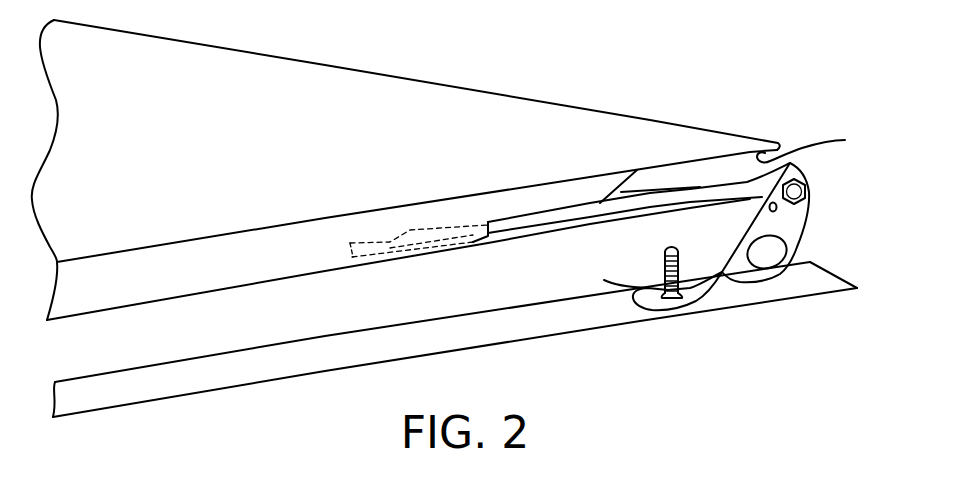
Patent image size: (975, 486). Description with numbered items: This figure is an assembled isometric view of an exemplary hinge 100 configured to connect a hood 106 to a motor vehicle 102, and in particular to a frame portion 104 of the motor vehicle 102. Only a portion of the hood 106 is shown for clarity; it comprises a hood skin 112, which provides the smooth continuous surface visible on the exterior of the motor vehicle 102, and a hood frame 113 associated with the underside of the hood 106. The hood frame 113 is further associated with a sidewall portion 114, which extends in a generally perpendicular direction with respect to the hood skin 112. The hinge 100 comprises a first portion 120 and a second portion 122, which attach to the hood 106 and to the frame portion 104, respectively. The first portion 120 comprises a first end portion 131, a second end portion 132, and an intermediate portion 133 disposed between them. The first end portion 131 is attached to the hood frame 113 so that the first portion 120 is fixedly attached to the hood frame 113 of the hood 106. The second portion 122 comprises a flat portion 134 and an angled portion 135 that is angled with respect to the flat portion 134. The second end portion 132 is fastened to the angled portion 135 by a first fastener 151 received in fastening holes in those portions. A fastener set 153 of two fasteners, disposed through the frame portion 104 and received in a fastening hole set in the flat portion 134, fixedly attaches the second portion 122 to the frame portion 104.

The hinge 100 is at (817, 217).
The motor vehicle 102 is at (795, 64).
The frame portion 104 is at (283, 375).
The hood 106 is at (653, 127).
The hood skin 112 is at (465, 105).
The hood frame 113 is at (821, 145).
The sidewall portion 114 is at (264, 280).
The first portion 120 is at (552, 233).
The second portion 122 is at (648, 283).
The first end portion 131 is at (360, 262).
The second end portion 132 is at (750, 172).
The intermediate portion 133 is at (538, 207).
The flat portion 134 is at (660, 278).
The angled portion 135 is at (737, 278).
The first fastener 151 is at (806, 189).
The fastener set 153 is at (672, 299).